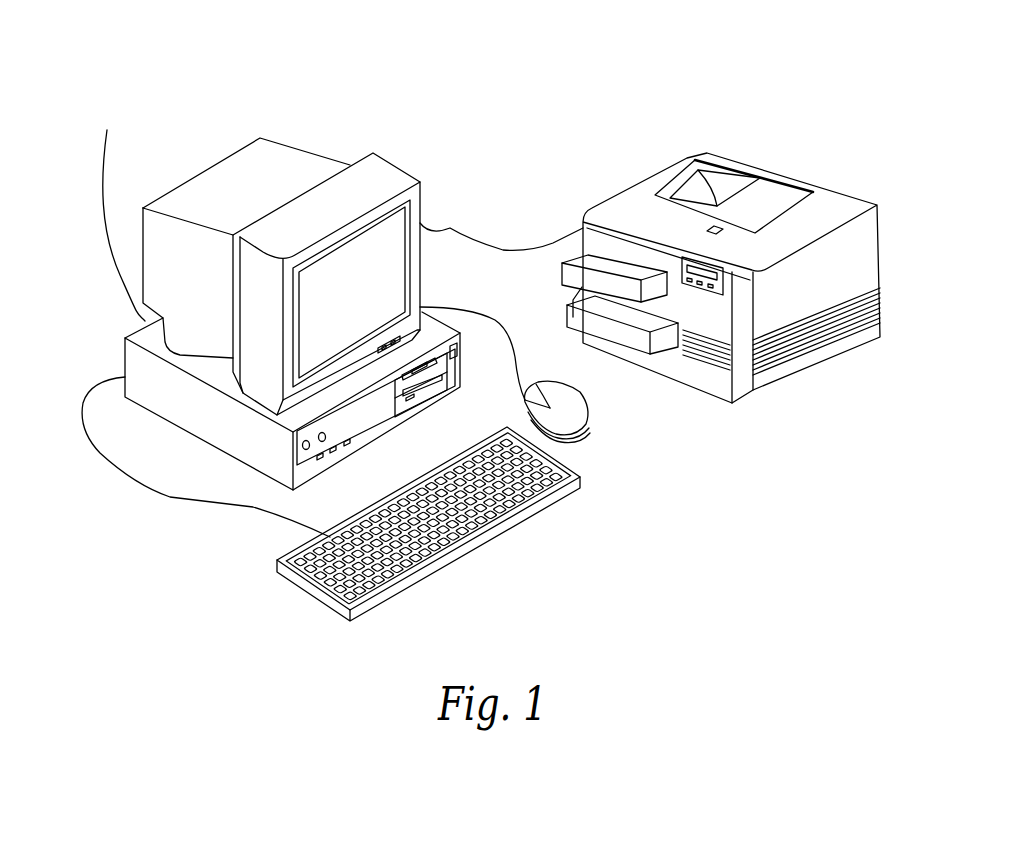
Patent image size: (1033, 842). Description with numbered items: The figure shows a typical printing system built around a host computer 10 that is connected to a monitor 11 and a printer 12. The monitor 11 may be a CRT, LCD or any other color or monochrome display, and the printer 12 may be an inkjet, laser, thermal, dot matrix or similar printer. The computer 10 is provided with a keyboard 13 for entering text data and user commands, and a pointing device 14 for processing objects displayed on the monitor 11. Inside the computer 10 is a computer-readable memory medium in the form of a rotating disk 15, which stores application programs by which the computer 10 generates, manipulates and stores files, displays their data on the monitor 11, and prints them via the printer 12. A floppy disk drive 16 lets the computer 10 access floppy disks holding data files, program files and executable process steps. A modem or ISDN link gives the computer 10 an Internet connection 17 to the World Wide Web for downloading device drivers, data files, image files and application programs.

The host computer 10 is at (600, 72).
The monitor 11 is at (396, 230).
The printer 12 is at (613, 200).
The keyboard 13 is at (312, 588).
The pointing device 14 is at (587, 408).
The rotating disk 15 is at (440, 393).
The floppy disk drive 16 is at (445, 372).
The Internet connection 17 is at (108, 148).